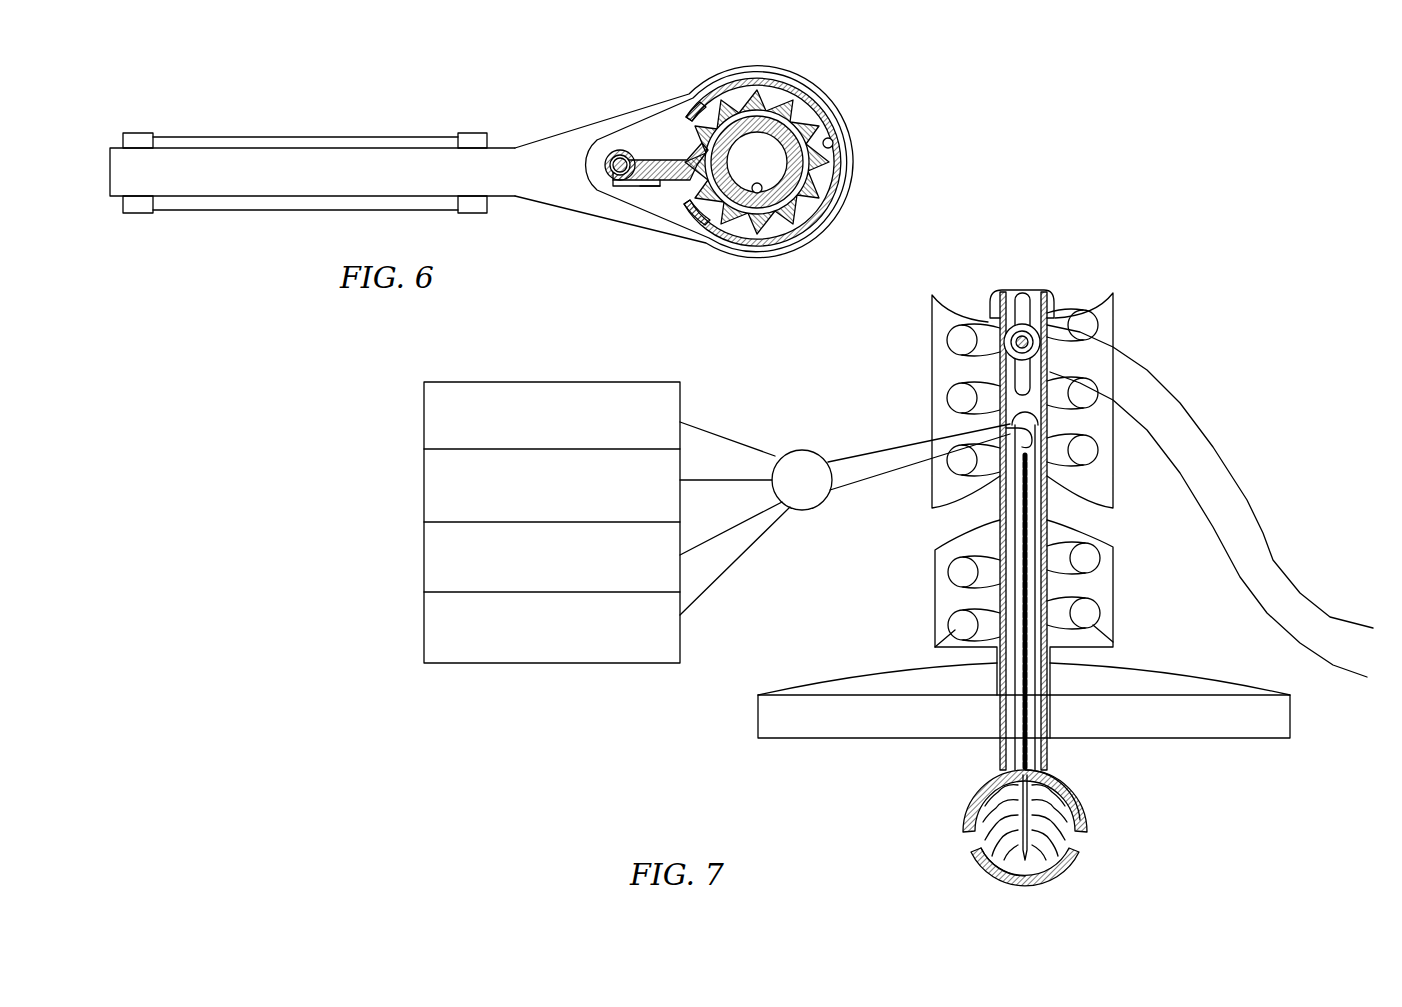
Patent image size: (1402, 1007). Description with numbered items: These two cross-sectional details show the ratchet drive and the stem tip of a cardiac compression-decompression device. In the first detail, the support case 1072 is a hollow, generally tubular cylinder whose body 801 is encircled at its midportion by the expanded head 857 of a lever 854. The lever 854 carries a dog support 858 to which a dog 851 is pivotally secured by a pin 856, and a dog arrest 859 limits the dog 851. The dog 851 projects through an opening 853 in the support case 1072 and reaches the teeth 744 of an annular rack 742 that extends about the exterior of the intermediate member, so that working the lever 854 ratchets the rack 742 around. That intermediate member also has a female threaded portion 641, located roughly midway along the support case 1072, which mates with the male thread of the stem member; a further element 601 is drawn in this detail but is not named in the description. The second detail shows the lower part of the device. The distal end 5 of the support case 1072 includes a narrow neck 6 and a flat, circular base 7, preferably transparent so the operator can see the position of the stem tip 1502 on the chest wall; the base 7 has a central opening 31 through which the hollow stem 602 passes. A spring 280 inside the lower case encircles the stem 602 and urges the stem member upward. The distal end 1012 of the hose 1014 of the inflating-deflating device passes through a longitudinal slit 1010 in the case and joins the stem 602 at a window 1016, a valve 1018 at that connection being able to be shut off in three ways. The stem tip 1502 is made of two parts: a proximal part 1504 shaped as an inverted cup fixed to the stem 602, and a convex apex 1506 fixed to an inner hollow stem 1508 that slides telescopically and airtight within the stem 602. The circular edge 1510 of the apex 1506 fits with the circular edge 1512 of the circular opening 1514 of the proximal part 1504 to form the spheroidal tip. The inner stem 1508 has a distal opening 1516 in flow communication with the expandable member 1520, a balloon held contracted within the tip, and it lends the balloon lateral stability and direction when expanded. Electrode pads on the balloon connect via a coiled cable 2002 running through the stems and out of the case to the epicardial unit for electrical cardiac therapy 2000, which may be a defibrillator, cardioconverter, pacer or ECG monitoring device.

In FIG. 6, the lever 854 is at (290, 182).
In FIG. 6, the teeth 744 is at (820, 227).
In FIG. 6, the expanded head 857 is at (767, 75).
In FIG. 6, the opening 853 is at (685, 117).
In FIG. 6, the body 801 is at (697, 217).
In FIG. 6, the annular rack 742 is at (800, 112).
In FIG. 6, the hub 601 is at (750, 193).
In FIG. 6, the female threaded portion 641 is at (770, 220).
In FIG. 6, the support case 1072 is at (833, 150).
In FIG. 6, the dog 851 is at (650, 160).
In FIG. 6, the pin 856 is at (610, 153).
In FIG. 6, the dog support 858 is at (620, 190).
In FIG. 6, the dog arrest 859 is at (653, 187).
In FIG. 7, the epicardial unit for electrical cardiac therapy 2000 is at (500, 684).
In FIG. 7, the coiled cable 2002 is at (847, 461).
In FIG. 7, the hollow stem 602 is at (998, 500).
In FIG. 7, the central opening 31 is at (1000, 738).
In FIG. 7, the longitudinal slit 1010 is at (1058, 312).
In FIG. 7, the window 1016 is at (1007, 357).
In FIG. 7, the distal end of hose 1012 is at (1033, 323).
In FIG. 7, the valve 1018 is at (1007, 338).
In FIG. 7, the hose 1014 is at (1247, 508).
In FIG. 7, the spring 280 is at (1098, 612).
In FIG. 7, the base 7 is at (840, 695).
In FIG. 7, the distal end 5 is at (995, 693).
In FIG. 7, the narrow neck 6 is at (1053, 657).
In FIG. 7, the inner hollow stem 1508 is at (1090, 716).
In FIG. 7, the stem tip 1502 is at (970, 795).
In FIG. 7, the proximal part 1504 is at (1082, 795).
In FIG. 7, the convex apex 1506 is at (1060, 870).
In FIG. 7, the circular edge 1510 is at (978, 850).
In FIG. 7, the circular edge 1512 is at (965, 830).
In FIG. 7, the circular opening 1514 is at (995, 835).
In FIG. 7, the expandable member 1520 is at (1060, 822).
In FIG. 7, the distal opening 1516 is at (1050, 823).